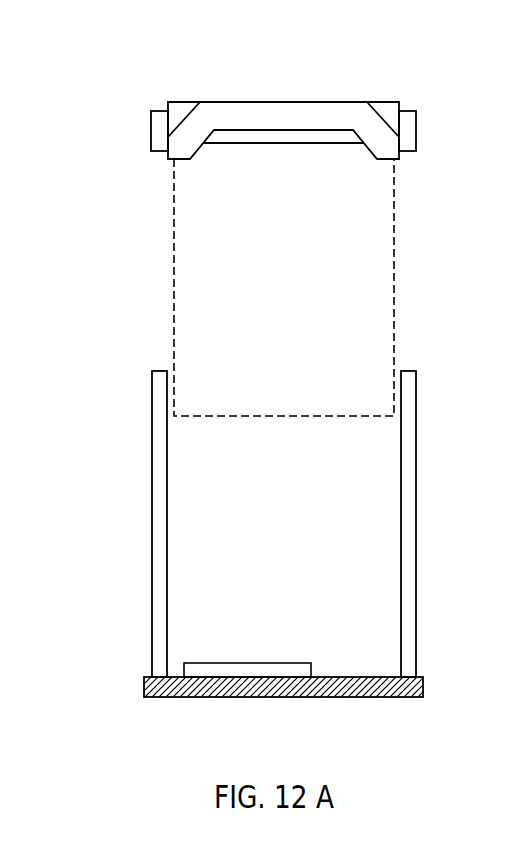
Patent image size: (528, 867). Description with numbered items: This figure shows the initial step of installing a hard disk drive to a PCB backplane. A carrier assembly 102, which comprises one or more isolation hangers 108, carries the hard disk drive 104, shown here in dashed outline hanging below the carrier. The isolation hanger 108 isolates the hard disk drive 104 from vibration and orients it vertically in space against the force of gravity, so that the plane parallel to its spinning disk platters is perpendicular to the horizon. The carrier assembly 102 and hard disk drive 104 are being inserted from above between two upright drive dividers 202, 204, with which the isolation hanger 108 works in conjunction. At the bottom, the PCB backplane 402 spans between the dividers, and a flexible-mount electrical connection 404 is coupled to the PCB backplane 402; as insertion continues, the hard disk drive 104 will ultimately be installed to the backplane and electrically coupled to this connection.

The carrier assembly 102 is at (276, 80).
The hard disk drive 104 is at (342, 231).
The isolation hanger 108 is at (407, 135).
The drive divider 202 is at (158, 496).
The drive divider 204 is at (410, 496).
The PCB backplane 402 is at (367, 683).
The flexible-mount electrical connection 404 is at (225, 669).